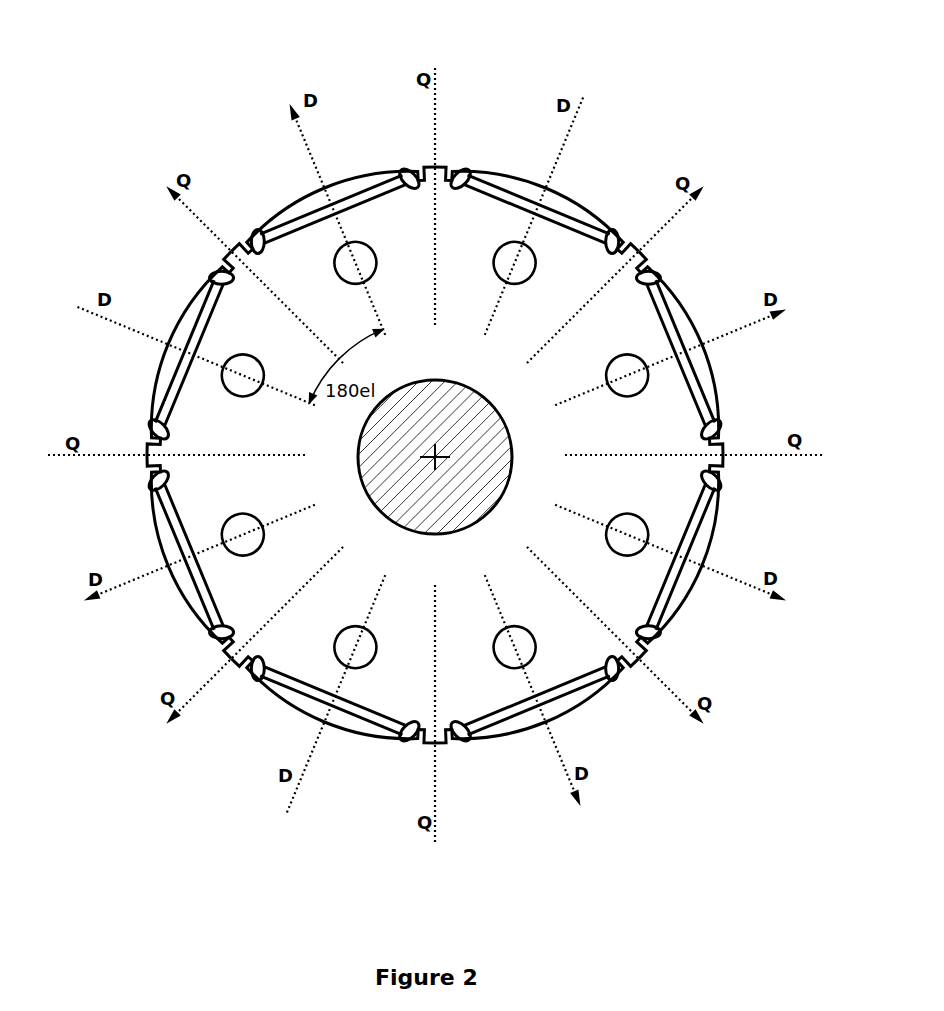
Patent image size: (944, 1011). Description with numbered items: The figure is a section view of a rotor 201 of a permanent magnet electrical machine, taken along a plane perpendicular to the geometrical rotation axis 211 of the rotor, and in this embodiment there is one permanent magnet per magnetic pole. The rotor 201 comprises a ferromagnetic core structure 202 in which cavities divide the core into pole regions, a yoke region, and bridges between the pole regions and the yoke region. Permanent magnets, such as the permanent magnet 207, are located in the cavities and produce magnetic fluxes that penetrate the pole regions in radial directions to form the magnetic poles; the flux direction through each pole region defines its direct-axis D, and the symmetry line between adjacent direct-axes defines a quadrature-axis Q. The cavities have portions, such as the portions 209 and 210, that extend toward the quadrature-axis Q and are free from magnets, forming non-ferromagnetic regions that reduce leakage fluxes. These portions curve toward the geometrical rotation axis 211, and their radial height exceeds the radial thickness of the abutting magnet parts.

The rotor 201 is at (512, 167).
The ferromagnetic core structure 202 is at (472, 367).
The permanent magnet 207 is at (310, 222).
The portion of cavity 209 is at (255, 238).
The portion of cavity 210 is at (400, 178).
The geometrical rotation axis 211 is at (436, 458).